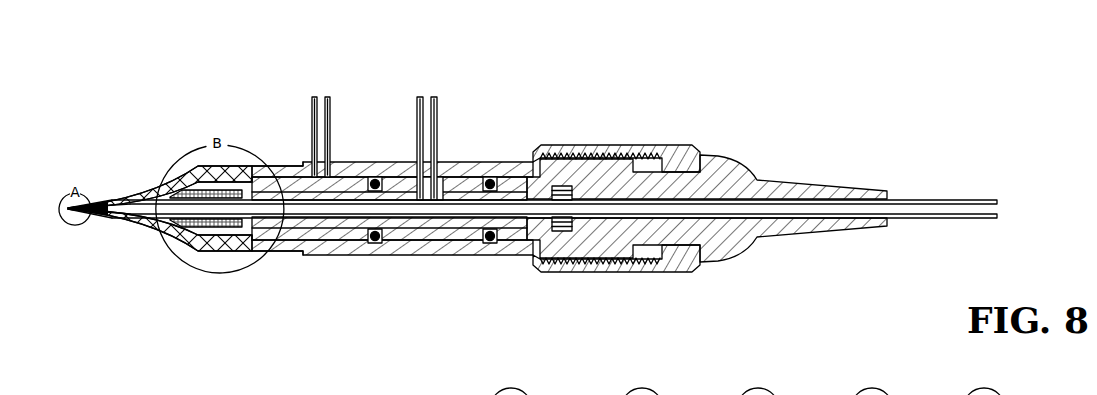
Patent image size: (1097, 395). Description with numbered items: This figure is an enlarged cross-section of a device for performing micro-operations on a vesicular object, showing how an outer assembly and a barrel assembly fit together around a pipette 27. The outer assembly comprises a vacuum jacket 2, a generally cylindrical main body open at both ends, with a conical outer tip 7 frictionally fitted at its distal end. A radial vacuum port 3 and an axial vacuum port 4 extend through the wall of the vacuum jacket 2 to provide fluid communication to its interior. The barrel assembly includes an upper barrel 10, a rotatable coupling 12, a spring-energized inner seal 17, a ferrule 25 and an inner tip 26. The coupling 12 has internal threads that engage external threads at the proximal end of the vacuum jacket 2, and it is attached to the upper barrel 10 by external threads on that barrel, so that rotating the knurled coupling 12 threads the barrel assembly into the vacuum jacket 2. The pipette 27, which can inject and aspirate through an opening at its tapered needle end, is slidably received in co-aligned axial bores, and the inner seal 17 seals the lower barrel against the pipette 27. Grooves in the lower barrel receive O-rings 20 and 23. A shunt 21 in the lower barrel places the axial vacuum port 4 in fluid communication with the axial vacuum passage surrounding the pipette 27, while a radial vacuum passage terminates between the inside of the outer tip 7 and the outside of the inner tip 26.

The vacuum jacket 2 is at (428, 250).
The radial vacuum port 3 is at (312, 97).
The axial vacuum port 4 is at (418, 97).
The outer tip 7 is at (140, 226).
The upper barrel 10 is at (775, 185).
The rotatable coupling 12 is at (627, 152).
The inner seal 17 is at (560, 188).
The O-ring 20 is at (488, 241).
The shunt 21 is at (424, 190).
The O-ring 23 is at (372, 241).
The ferrule 25 is at (196, 194).
The inner tip 26 is at (150, 200).
The pipette 27 is at (948, 202).